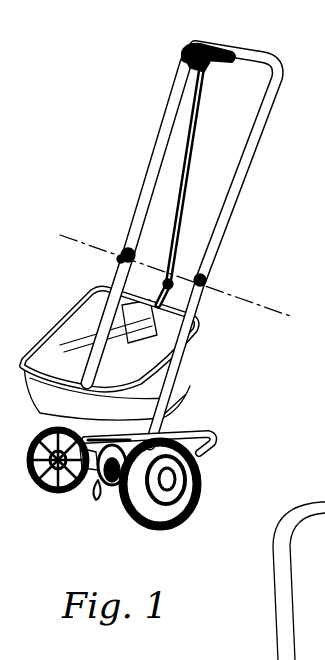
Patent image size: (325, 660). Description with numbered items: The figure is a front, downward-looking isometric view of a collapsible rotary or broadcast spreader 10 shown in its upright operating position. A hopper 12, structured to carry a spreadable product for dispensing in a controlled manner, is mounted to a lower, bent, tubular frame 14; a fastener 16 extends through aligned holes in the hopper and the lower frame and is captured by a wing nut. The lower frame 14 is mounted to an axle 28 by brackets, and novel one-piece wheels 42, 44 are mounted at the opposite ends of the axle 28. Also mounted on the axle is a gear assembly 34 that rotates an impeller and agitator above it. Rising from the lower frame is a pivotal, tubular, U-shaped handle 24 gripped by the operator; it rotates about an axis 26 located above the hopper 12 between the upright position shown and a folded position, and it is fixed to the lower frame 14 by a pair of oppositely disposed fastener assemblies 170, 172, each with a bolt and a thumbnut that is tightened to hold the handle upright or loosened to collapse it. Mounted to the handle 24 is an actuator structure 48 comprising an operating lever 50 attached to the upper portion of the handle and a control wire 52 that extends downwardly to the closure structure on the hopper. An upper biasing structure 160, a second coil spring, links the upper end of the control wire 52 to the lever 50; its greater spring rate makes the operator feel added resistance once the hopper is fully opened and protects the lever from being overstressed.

The collapsible spreader 10 is at (173, 341).
The hopper 12 is at (153, 393).
The lower frame 14 is at (197, 313).
The fastener 16 is at (87, 327).
The handle 24 is at (268, 134).
The axis 26 is at (266, 310).
The axle 28 is at (123, 483).
The gear assembly 34 is at (81, 494).
The wheel 42 is at (37, 488).
The wheel 44 is at (187, 508).
The actuator structure 48 is at (210, 70).
The operating lever 50 is at (226, 53).
The control wire 52 is at (192, 165).
The upper biasing structure 160 is at (180, 92).
The fastener assembly 170 is at (126, 250).
The fastener assembly 172 is at (204, 284).